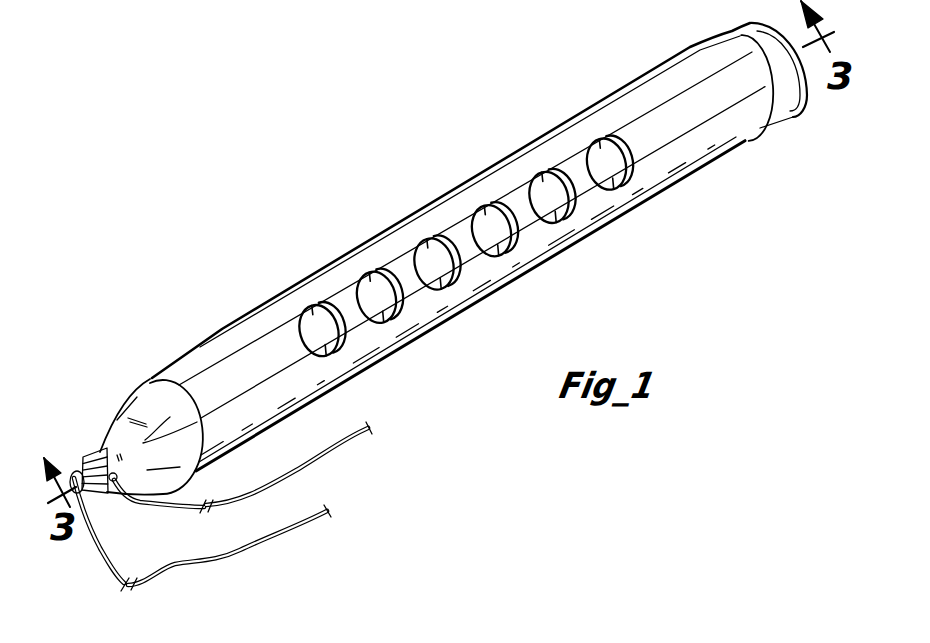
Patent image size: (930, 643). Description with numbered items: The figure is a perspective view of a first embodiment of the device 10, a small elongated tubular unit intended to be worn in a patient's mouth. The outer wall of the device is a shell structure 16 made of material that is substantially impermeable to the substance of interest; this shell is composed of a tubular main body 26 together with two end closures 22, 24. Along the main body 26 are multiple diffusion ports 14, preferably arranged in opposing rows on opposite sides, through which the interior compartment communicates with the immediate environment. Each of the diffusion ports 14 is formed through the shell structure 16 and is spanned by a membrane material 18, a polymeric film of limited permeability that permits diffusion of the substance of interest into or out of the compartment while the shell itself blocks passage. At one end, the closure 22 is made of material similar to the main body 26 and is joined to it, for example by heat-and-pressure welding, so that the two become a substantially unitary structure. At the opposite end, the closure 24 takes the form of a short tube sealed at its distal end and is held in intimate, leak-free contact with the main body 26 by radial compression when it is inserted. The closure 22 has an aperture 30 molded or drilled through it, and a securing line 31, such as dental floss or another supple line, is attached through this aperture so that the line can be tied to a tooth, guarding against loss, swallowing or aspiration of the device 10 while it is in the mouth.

The device 10 is at (518, 133).
The diffusion ports 14 is at (413, 380).
The shell structure 16 is at (734, 150).
The membrane material 18 is at (594, 142).
The end closure 22 is at (174, 376).
The end closure 24 is at (782, 87).
The main body 26 is at (667, 180).
The aperture 30 is at (104, 463).
The securing line 31 is at (270, 545).